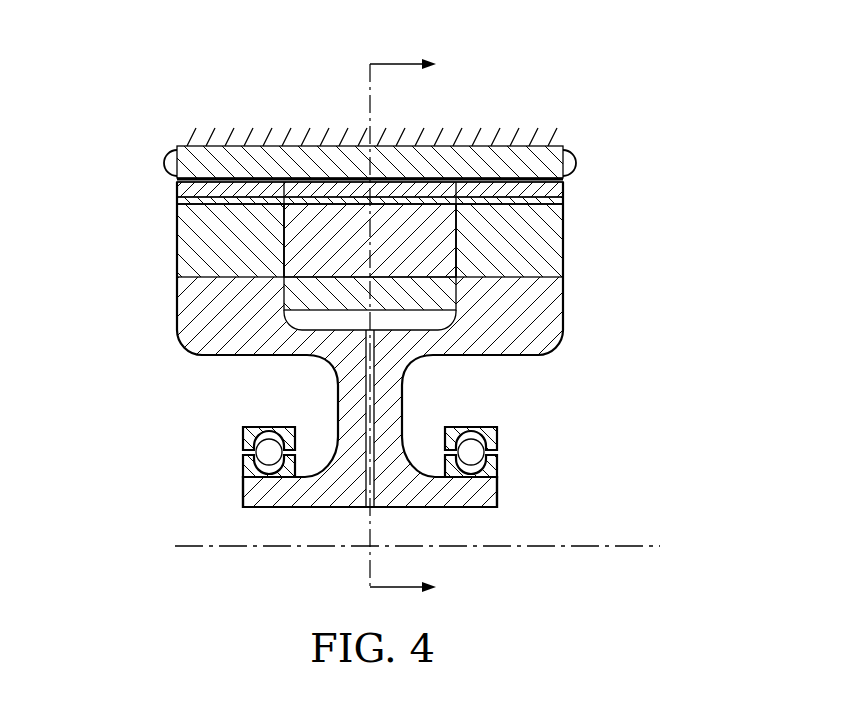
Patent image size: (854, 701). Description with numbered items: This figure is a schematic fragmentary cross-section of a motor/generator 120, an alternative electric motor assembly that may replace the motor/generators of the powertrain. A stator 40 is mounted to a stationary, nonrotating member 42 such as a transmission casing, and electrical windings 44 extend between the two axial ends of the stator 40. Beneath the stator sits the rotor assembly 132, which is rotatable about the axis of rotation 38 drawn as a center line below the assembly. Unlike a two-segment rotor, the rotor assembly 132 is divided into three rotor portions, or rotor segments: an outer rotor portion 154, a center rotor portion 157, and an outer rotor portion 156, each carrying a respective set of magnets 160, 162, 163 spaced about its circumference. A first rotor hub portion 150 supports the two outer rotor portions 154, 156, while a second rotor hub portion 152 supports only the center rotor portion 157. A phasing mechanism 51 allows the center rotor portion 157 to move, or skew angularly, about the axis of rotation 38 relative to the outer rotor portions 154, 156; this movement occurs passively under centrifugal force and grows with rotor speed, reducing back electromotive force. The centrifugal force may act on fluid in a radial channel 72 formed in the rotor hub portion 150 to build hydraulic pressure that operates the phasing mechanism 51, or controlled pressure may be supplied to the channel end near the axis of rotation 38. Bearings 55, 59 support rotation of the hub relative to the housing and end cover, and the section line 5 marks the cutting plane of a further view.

The motor/generator 120 is at (606, 68).
The section line 5- 5 is at (392, 328).
The stationary member 42 is at (542, 136).
The stator 40 is at (307, 160).
The electrical windings 44 is at (165, 163).
The rotor assembly 132 is at (592, 253).
The set of magnets 160 is at (177, 188).
The set of magnets 163 is at (413, 190).
The set of magnets 162 is at (565, 200).
The rotor portion 154 is at (230, 240).
The center rotor portion 157 is at (370, 240).
The rotor portion 156 is at (509, 240).
The second rotor hub portion 152 is at (393, 292).
The first rotor hub portion 150 is at (236, 333).
The phasing mechanism 51 is at (332, 322).
The radial channel 72 is at (372, 448).
The bearing 55 is at (243, 468).
The bearing 59 is at (497, 433).
The axis of rotation 38 is at (603, 546).